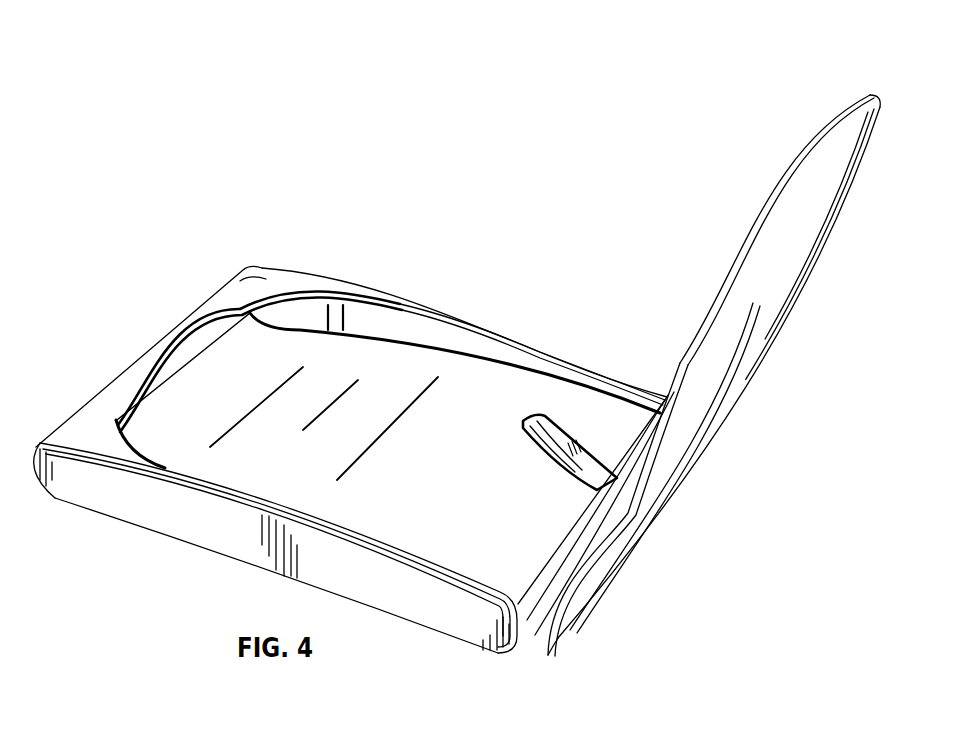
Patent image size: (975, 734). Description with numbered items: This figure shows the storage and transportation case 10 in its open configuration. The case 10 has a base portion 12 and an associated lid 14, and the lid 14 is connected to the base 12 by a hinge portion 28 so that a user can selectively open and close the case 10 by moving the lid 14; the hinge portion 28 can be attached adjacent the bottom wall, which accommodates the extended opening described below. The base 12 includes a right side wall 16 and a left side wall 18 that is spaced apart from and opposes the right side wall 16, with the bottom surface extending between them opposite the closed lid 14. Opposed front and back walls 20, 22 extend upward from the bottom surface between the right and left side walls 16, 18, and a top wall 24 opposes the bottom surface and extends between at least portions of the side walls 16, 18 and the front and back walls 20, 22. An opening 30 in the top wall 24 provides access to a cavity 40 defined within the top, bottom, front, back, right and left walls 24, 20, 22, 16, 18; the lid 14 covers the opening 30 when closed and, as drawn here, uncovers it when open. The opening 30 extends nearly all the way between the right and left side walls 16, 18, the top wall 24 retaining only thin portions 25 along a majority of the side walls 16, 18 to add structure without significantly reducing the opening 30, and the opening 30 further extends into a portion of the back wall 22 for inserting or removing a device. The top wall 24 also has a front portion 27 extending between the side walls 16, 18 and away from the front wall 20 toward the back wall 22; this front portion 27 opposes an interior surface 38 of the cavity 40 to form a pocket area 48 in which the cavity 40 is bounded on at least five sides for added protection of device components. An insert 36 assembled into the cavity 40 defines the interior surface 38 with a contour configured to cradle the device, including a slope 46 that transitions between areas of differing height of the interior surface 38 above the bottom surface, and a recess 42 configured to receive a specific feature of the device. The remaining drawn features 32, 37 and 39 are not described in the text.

The storage and transportation case 10 is at (168, 53).
The base portion 12 is at (463, 680).
The lid 14 is at (752, 343).
The right side wall 16 is at (223, 533).
The left side wall 18 is at (452, 342).
The front wall 20 is at (127, 367).
The back wall 22 is at (523, 618).
The top wall 24 is at (113, 430).
The thin portions 25 is at (253, 497).
The front portion 27 is at (197, 323).
The hinge portion 28 is at (558, 638).
The opening 30 is at (365, 310).
The liner rolled edge 32 is at (268, 298).
The insert 36 is at (487, 372).
The inner surface 37 is at (230, 413).
The interior surface 38 is at (437, 482).
The floor 39 is at (457, 543).
The cavity 40 is at (537, 364).
The recess 42 is at (559, 424).
The slope 46 is at (387, 363).
The pocket area 48 is at (172, 368).